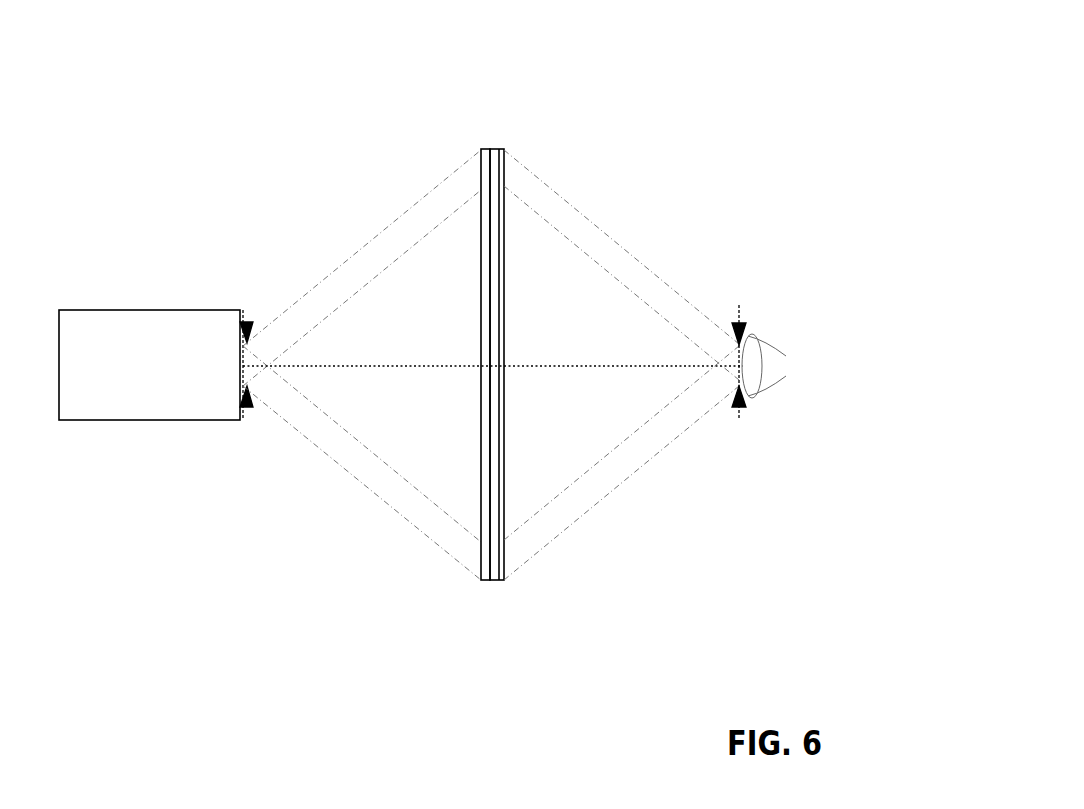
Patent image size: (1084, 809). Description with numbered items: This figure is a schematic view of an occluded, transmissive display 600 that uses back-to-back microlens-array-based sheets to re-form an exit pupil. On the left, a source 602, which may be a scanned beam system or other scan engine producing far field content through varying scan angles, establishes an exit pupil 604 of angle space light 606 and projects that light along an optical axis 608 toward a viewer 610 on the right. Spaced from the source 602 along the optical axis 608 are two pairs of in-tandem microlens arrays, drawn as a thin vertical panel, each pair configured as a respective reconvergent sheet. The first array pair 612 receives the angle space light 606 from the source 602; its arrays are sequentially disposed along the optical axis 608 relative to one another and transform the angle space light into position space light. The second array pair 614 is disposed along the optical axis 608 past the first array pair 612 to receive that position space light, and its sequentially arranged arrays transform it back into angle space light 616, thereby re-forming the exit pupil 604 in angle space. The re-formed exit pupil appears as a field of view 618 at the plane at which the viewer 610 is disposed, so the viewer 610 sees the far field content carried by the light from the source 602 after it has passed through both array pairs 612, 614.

The display 600 is at (701, 40).
The source 602 is at (149, 365).
The exit pupil 604 is at (246, 318).
The angle space light 606 is at (372, 240).
The optical axis 608 is at (561, 368).
The viewer 610 is at (768, 378).
The first array pair 612 is at (485, 149).
The second array pair 614 is at (498, 149).
The angle space light 616 is at (588, 219).
The field of view 618 is at (741, 318).